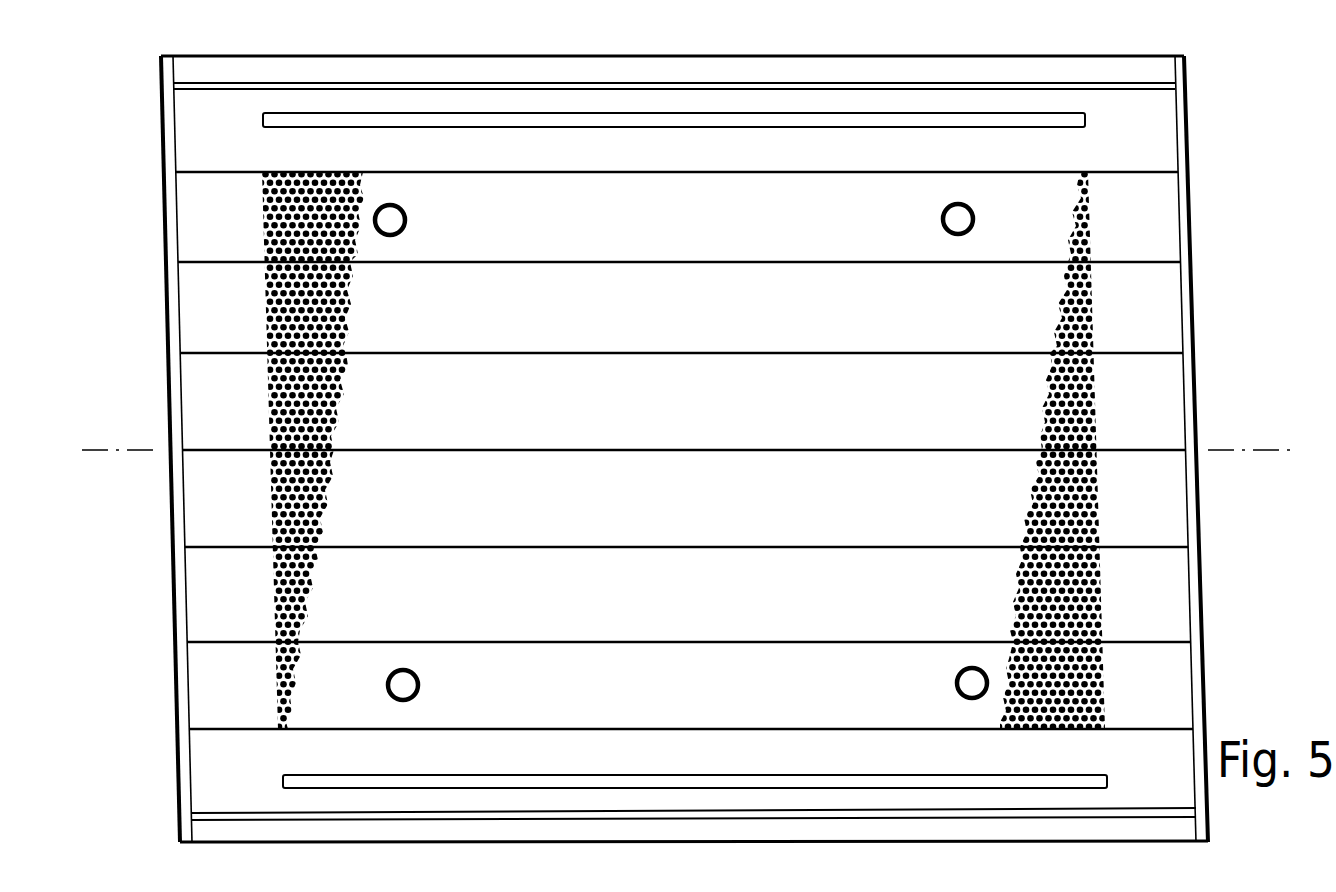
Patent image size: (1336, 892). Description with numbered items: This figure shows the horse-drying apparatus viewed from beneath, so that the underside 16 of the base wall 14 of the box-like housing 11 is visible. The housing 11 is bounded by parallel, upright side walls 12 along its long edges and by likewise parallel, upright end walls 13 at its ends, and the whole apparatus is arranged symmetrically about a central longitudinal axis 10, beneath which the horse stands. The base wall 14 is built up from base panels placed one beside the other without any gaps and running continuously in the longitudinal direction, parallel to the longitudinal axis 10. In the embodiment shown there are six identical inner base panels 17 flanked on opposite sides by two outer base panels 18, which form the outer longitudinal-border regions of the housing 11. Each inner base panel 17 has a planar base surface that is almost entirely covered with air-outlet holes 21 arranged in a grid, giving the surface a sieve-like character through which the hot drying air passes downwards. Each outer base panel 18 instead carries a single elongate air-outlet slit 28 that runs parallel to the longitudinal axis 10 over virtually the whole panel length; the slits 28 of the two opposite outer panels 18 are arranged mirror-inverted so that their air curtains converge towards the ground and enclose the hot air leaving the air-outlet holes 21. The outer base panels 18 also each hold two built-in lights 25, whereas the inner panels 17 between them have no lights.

The central longitudinal axis 10 is at (1250, 449).
The housing 11 is at (1206, 270).
The side wall 12 is at (1143, 55).
The end wall 13 is at (174, 690).
The base wall 14 is at (681, 529).
The underside 16 is at (620, 688).
The inner base panel 17 is at (709, 234).
The outer base panel 18 is at (1143, 125).
The air-outlet hole 21 is at (1098, 408).
The built-in light 25 is at (376, 222).
The air-outlet slit 28 is at (283, 122).